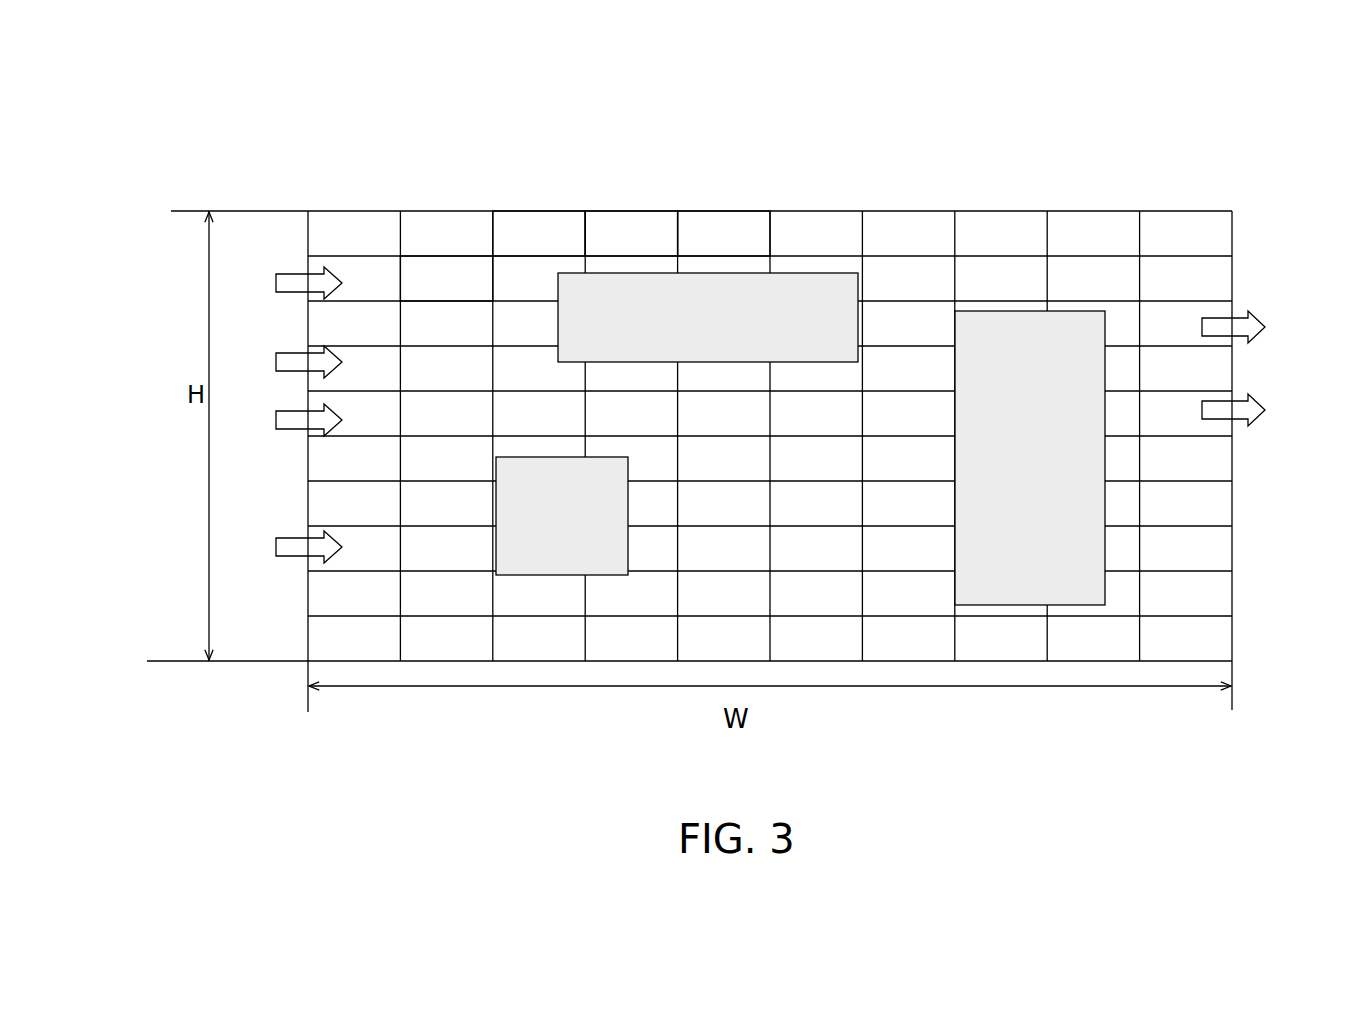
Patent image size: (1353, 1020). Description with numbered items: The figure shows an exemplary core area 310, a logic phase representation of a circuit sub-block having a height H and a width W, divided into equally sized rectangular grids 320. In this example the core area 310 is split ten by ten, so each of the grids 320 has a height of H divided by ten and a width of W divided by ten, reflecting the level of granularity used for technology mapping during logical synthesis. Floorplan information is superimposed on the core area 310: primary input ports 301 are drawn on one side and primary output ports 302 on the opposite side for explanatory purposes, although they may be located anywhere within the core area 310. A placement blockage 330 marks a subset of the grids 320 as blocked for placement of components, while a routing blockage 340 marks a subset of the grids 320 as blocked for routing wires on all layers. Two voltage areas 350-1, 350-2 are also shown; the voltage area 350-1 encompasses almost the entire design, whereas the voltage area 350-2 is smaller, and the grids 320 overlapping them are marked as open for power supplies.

The primary input ports 301 is at (258, 232).
The primary output ports 302 is at (1263, 278).
The core area 310 is at (335, 130).
The grids 320 is at (722, 223).
The placement blockage 330 is at (708, 317).
The routing blockage 340 is at (562, 516).
The voltage area 350-1 is at (446, 279).
The voltage area 350-2 is at (1030, 458).